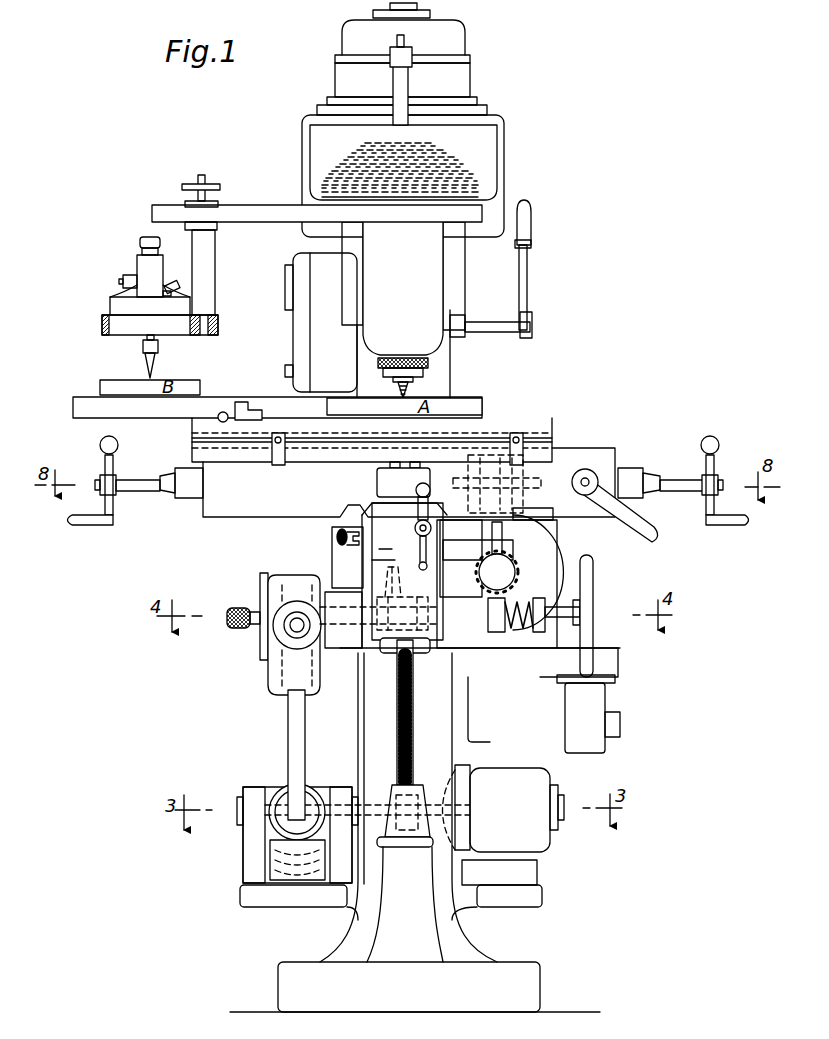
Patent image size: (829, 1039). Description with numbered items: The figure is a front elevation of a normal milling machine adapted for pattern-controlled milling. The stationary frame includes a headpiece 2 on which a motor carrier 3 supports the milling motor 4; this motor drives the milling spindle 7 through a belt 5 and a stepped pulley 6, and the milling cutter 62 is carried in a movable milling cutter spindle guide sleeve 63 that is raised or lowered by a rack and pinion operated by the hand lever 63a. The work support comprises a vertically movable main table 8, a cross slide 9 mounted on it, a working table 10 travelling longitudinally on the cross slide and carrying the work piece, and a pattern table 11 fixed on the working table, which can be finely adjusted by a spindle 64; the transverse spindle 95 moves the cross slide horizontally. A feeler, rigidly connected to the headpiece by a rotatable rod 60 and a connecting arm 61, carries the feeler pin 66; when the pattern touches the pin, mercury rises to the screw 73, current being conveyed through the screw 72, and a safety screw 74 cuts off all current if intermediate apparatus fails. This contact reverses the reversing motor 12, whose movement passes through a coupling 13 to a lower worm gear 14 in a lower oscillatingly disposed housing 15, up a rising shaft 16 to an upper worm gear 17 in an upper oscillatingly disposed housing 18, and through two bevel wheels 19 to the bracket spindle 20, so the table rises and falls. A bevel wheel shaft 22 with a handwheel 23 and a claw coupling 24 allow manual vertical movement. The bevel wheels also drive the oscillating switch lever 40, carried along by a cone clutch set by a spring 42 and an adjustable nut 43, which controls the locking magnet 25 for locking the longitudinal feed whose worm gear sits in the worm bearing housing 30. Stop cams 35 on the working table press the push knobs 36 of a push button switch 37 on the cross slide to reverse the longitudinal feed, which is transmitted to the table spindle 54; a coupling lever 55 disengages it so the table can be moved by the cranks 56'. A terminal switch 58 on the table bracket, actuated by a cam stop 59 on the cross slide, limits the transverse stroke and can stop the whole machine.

The headpiece 2 is at (440, 268).
The motor carrier 3 is at (504, 159).
The milling motor 4 is at (450, 33).
The belt 5 is at (484, 187).
The stepped pulley 6 is at (362, 156).
The milling spindle 7 is at (405, 80).
The main table 8 is at (404, 575).
The cross slide 9 is at (222, 519).
The working table 10 is at (548, 421).
The pattern table 11 is at (75, 408).
The reversing motor 12 is at (546, 786).
The coupling 13 is at (400, 840).
The lower worm gear 14 is at (318, 796).
The lower oscillatingly disposed housing 15 is at (264, 790).
The rising shaft 16 is at (288, 731).
The upper worm gear 17 is at (290, 582).
The upper oscillatingly disposed housing 18 is at (270, 575).
The bevel wheels 19 is at (388, 598).
The bracket spindle 20 is at (413, 729).
The bevel wheel shaft 22 is at (580, 612).
The handwheel 23 is at (593, 574).
The claw coupling 24 is at (248, 609).
The locking magnet 25 is at (605, 701).
The worm bearing housing 30 is at (558, 548).
The stop cams 35 is at (280, 463).
The push knobs 36 is at (390, 468).
The push button switch 37 is at (378, 485).
The oscillating switch lever 40 is at (498, 633).
The spring 42 is at (520, 633).
The adjustable nut 43 is at (540, 633).
The table spindle 54 is at (670, 478).
The coupling lever 55 is at (648, 541).
The cranks 56' is at (408, 493).
The terminal switch 58 is at (362, 556).
The cam stop 59 is at (337, 538).
The rotatable rod 60 is at (214, 272).
The connecting arm 61 is at (250, 209).
The milling cutter 62 is at (412, 391).
The milling cutter spindle guide sleeve 63 is at (430, 366).
The hand lever 63a is at (531, 266).
The spindle 64 is at (228, 412).
The feeler pin 66 is at (145, 363).
The screw 72 is at (172, 283).
The screw 73 is at (124, 280).
The screw 74 is at (148, 244).
The transverse spindle 95 is at (414, 525).